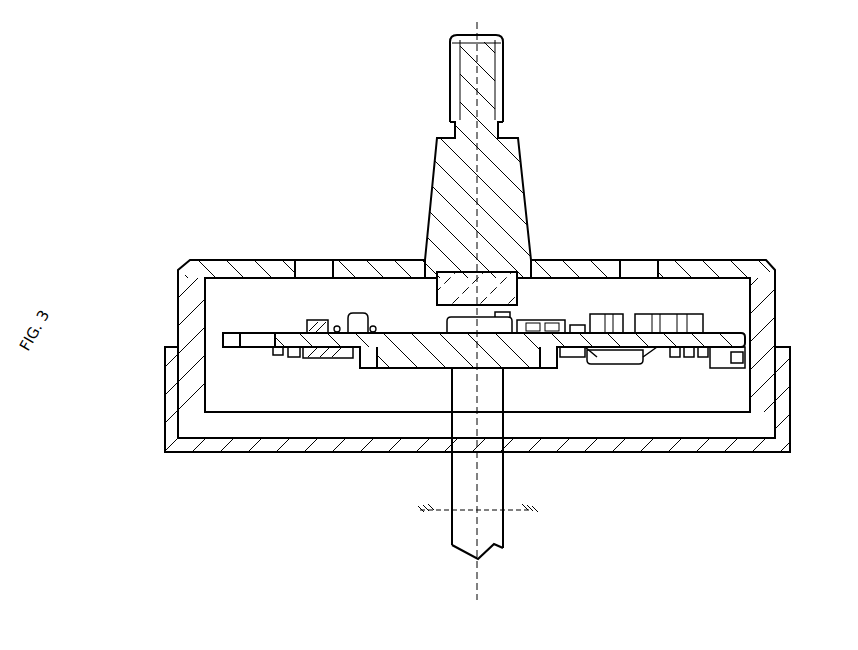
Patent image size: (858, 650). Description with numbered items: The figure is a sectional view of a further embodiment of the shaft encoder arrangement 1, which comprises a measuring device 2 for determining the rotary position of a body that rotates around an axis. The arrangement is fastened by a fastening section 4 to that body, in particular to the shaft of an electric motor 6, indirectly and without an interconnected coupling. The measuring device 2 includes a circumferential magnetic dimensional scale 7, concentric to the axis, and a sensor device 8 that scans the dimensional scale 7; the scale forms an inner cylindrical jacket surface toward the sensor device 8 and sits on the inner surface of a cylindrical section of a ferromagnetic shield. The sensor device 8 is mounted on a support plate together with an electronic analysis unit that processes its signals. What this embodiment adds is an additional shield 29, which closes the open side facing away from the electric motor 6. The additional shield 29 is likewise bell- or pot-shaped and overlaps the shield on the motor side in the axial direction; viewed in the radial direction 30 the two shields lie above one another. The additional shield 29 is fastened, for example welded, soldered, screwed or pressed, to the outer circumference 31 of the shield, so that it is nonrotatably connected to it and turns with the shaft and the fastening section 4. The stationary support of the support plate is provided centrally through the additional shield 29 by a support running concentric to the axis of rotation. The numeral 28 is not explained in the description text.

The shaft encoder arrangement 1 is at (797, 554).
The measuring device 2 is at (480, 560).
The fastening section 4 is at (778, 303).
The electric motor 6 is at (210, 370).
The magnetic dimensional scale 7 is at (780, 343).
The sensor device 8 is at (512, 512).
The shaft end 28 is at (452, 535).
The additional shield 29 is at (427, 357).
The radial direction 30 is at (690, 440).
The outer circumference 31 is at (176, 337).